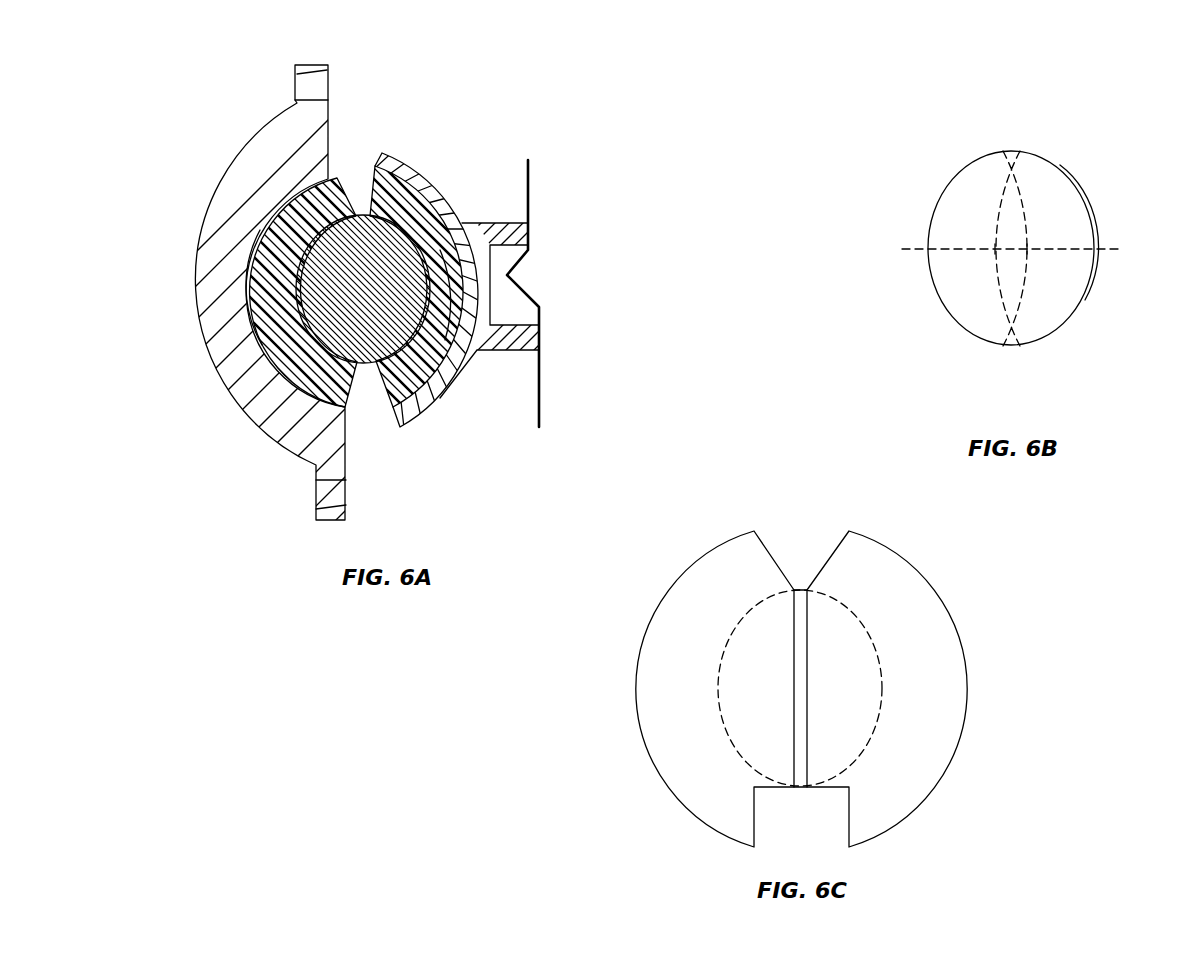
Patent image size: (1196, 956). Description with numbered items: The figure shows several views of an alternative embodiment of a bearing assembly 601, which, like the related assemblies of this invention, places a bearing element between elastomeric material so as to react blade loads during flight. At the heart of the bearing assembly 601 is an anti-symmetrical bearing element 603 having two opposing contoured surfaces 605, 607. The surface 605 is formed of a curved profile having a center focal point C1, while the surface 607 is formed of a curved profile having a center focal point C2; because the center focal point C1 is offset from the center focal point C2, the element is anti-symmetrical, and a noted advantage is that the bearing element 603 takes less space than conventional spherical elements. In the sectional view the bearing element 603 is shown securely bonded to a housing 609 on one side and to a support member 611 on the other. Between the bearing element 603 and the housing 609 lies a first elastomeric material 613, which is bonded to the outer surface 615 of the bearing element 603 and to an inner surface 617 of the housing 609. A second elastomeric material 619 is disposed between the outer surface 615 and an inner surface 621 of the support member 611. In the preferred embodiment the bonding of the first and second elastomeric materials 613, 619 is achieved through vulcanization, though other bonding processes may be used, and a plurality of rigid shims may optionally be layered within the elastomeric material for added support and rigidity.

In FIG. 6A, the bearing assembly 601 is at (165, 66).
In FIG. 6B, the anti-symmetrical bearing element 603 is at (992, 152).
In FIG. 6B, the contoured surface 605 is at (932, 194).
In FIG. 6B, the contoured surface 607 is at (1104, 220).
In FIG. 6A, the housing 609 is at (224, 180).
In FIG. 6A, the support member 611 is at (498, 223).
In FIG. 6A, the first elastomeric material 613 is at (338, 180).
In FIG. 6C, the first elastomeric material 613 is at (672, 590).
In FIG. 6A, the outer surface 615 is at (300, 327).
In FIG. 6C, the outer surface 615 is at (709, 724).
In FIG. 6A, the inner surface 617 is at (242, 277).
In FIG. 6A, the second elastomeric material 619 is at (440, 172).
In FIG. 6C, the second elastomeric material 619 is at (952, 758).
In FIG. 6A, the inner surface 621 is at (451, 369).
In FIG. 6B, the center focal point C1 is at (1027, 250).
In FIG. 6B, the center focal point C2 is at (995, 250).